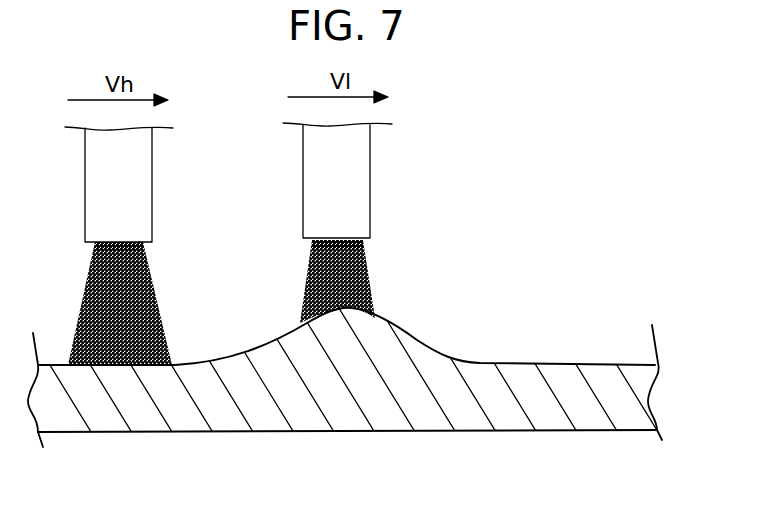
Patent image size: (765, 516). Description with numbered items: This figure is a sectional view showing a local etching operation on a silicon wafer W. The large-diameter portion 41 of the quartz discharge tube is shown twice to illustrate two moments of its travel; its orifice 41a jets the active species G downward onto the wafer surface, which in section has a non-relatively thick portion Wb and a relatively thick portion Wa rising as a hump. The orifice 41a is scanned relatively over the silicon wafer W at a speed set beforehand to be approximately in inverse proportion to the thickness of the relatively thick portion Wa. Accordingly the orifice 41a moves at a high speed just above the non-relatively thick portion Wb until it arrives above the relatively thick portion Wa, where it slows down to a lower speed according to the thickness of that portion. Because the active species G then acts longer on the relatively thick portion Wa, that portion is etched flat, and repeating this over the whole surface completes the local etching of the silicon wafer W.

The large-diameter portion 41 is at (152, 165).
The orifice 41a is at (143, 258).
The active species G is at (123, 273).
The silicon wafer W is at (625, 400).
The relatively thick portion Wa is at (367, 323).
The non-relatively thick portion Wb is at (140, 337).